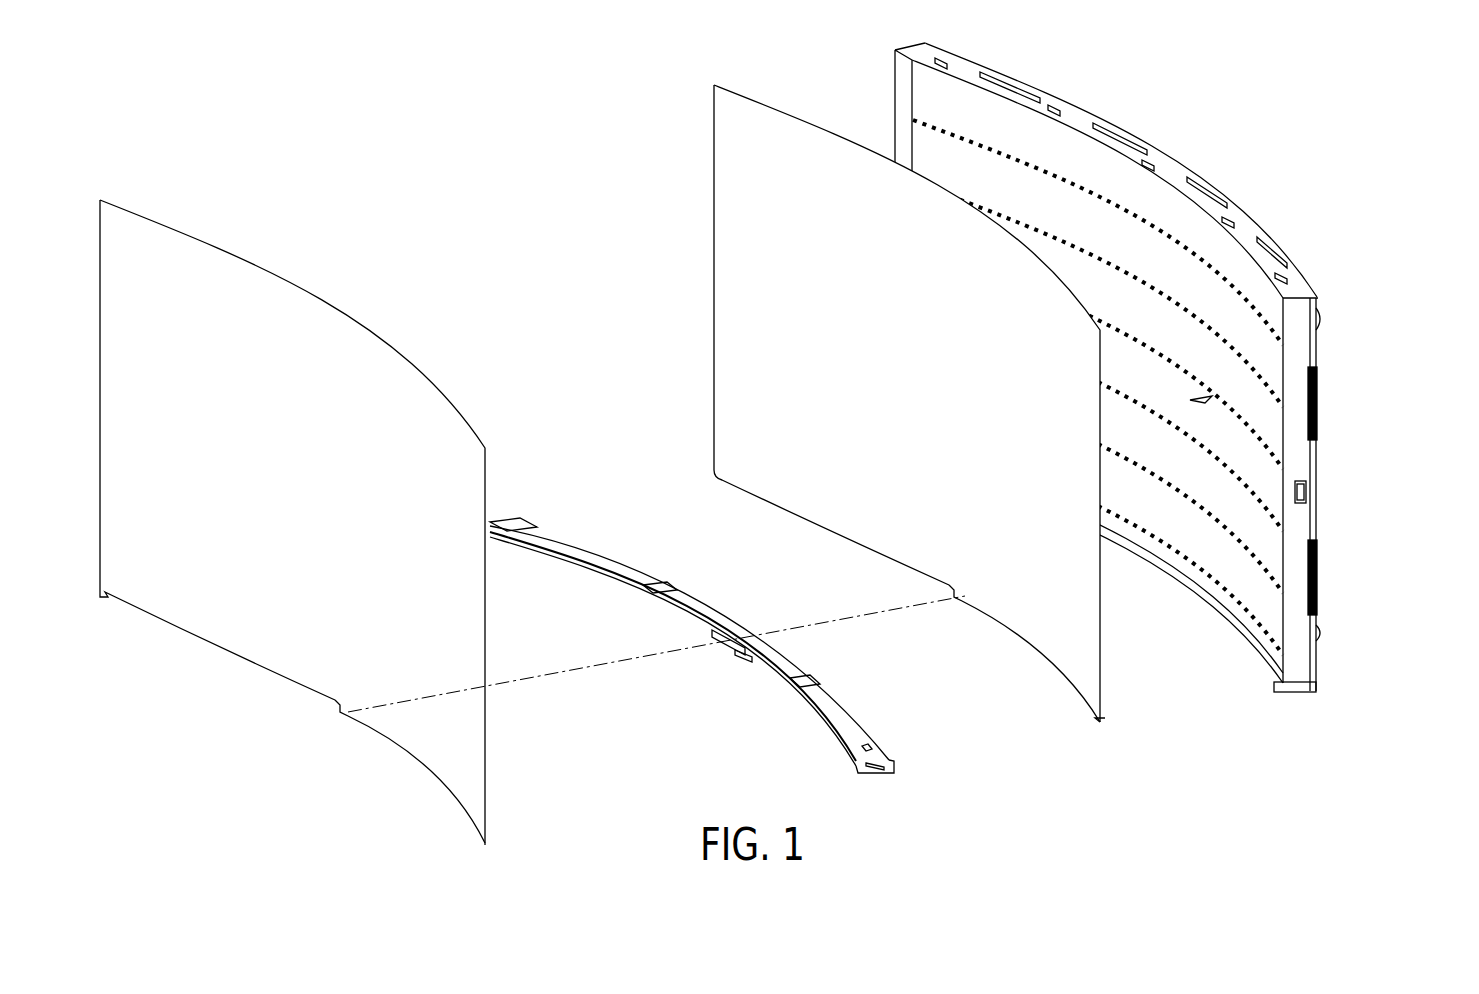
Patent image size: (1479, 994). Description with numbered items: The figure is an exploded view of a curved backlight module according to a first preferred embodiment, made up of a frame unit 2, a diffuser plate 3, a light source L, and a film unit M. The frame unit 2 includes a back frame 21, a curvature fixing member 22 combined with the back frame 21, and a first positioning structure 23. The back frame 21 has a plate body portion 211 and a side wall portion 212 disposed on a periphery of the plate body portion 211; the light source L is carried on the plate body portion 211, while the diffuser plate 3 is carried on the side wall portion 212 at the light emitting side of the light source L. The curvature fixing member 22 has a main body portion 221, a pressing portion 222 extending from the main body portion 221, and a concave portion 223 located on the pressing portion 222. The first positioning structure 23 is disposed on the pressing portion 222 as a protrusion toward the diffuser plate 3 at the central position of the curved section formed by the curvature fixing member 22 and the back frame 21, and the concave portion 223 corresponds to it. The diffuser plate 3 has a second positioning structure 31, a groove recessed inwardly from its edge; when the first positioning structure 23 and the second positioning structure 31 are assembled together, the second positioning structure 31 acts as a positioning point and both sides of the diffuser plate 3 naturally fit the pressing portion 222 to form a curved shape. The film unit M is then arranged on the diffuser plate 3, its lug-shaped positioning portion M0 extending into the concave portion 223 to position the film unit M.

The frame unit 2 is at (1184, 361).
The back frame 21 is at (1374, 495).
The plate body portion 211 is at (1317, 353).
The side wall portion 212 is at (1298, 522).
The curvature fixing member 22 is at (758, 610).
The main body portion 221 is at (860, 733).
The pressing portion 222 is at (805, 712).
The concave portion 223 is at (742, 652).
The first positioning structure 23 is at (708, 662).
The diffuser plate 3 is at (855, 403).
The second positioning structure 31 is at (965, 600).
The light source L is at (1250, 597).
The film unit M is at (292, 522).
The positioning portion M0 is at (352, 722).